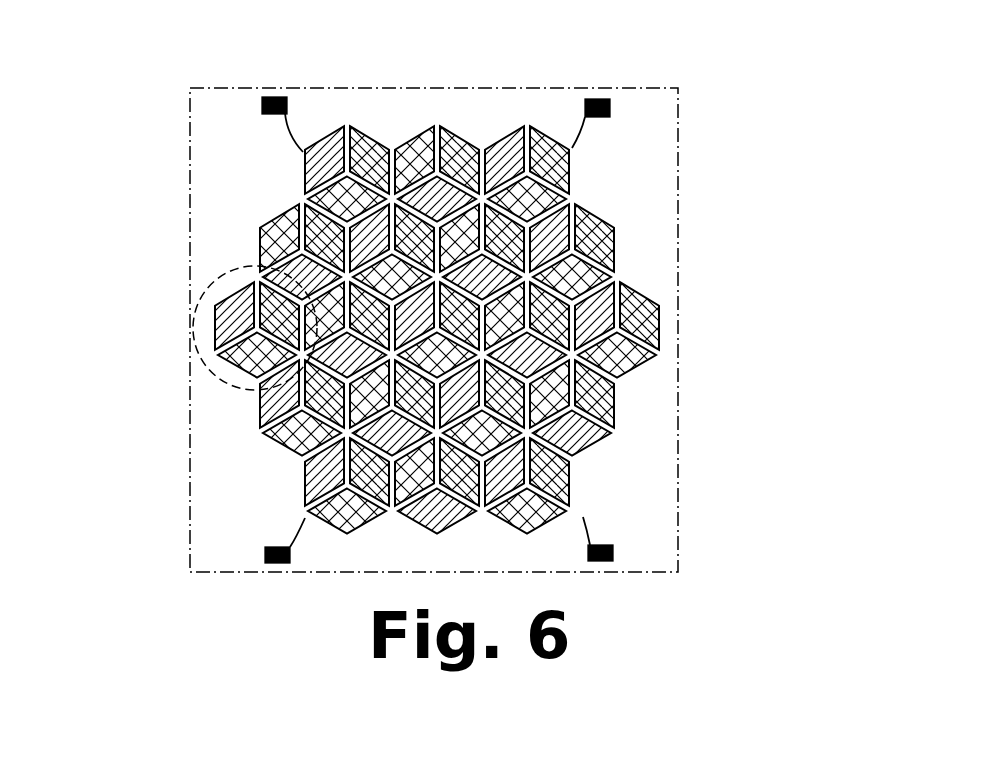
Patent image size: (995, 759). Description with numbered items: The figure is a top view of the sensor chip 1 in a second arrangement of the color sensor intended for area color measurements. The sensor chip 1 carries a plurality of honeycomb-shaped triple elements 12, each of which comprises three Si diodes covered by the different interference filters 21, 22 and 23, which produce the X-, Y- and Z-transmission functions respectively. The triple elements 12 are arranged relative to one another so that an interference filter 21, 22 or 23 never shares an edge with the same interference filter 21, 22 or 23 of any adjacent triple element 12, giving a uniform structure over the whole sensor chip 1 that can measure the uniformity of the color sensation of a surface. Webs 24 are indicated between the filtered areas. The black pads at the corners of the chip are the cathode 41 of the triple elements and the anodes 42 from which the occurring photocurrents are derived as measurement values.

The sensor chip 1 is at (647, 133).
The triple element 12 is at (220, 282).
The interference filter (X) 21 is at (320, 485).
The interference filter (Y) 22 is at (563, 507).
The interference filter (Z) 23 is at (625, 315).
The webs 24 is at (257, 217).
The cathode 41 is at (612, 556).
The anodes 42 is at (586, 100).